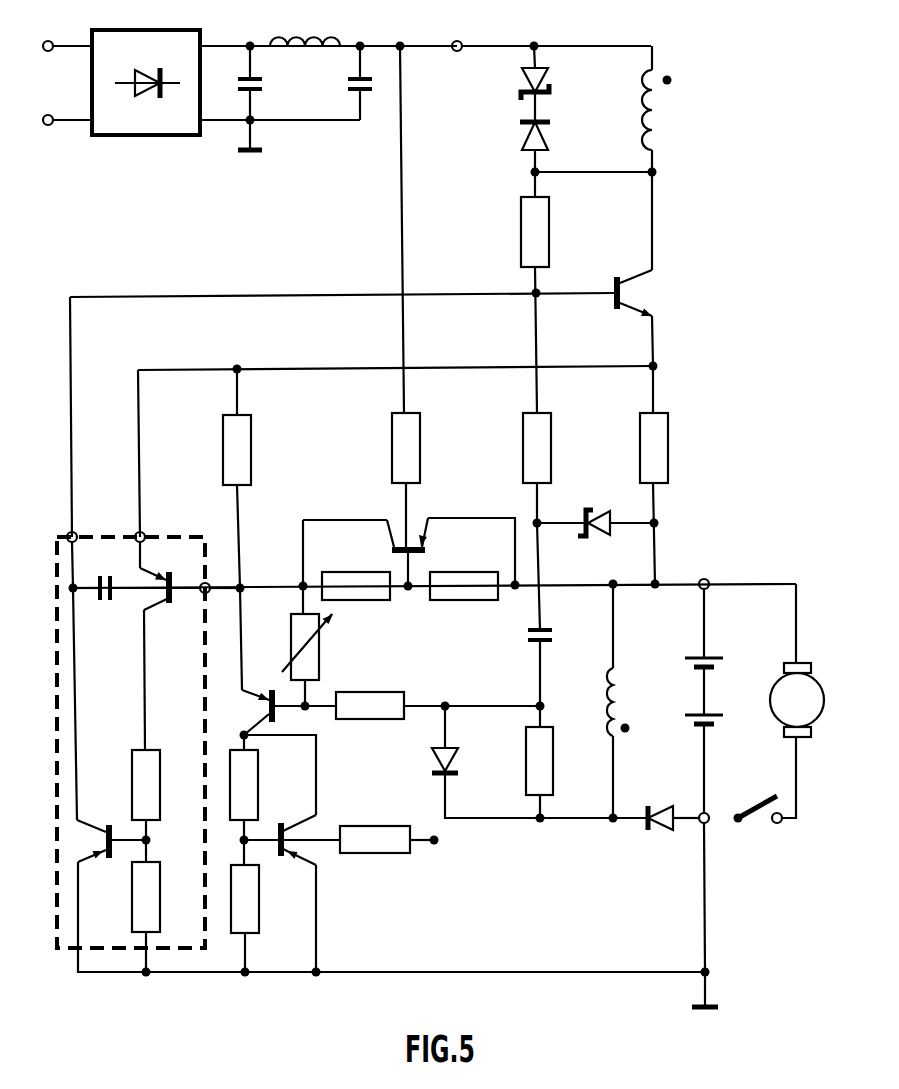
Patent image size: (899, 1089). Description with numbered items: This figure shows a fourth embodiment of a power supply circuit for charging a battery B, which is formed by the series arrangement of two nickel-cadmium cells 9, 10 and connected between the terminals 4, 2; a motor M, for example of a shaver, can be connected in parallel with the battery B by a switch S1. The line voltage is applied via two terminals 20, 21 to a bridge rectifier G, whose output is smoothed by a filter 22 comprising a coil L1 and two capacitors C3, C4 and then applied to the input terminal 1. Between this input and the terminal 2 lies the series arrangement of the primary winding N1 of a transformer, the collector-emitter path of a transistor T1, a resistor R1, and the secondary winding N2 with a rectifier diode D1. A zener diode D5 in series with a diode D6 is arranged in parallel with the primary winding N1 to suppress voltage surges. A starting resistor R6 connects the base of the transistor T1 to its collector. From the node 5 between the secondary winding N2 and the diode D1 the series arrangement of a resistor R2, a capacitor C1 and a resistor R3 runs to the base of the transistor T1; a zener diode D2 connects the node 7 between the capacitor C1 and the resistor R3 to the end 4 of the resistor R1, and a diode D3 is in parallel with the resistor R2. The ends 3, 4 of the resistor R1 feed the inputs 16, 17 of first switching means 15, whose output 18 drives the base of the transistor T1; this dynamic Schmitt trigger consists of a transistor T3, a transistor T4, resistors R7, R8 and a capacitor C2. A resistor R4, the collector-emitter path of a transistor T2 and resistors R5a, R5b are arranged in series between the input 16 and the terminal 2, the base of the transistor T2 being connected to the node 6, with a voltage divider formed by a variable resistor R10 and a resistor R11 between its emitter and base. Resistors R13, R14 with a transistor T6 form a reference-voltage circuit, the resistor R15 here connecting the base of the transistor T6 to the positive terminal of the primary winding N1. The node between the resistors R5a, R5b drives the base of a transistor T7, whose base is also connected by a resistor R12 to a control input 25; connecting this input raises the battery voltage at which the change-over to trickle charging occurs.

The terminal 20 is at (54, 32).
The terminal 21 is at (54, 106).
The bridge rectifier G is at (138, 136).
The filter 22 is at (302, 103).
The capacitor C3 is at (235, 111).
The capacitor C4 is at (347, 84).
The coil L1 is at (305, 25).
The input terminal 1 is at (456, 41).
The zener diode D5 is at (518, 80).
The diode D6 is at (518, 132).
The primary winding N1 is at (662, 108).
The starting resistor R6 is at (549, 230).
The transistor T1 is at (617, 276).
The end of resistor R1 3 is at (657, 363).
The resistor R4 is at (251, 447).
The resistor R15 is at (420, 445).
The resistor R3 is at (551, 445).
The resistor R1 is at (668, 445).
The zener diode D2 is at (600, 509).
The node 7 is at (540, 528).
The terminal 4 is at (704, 579).
The first switching means 15 is at (60, 950).
The output 18 is at (75, 533).
The input 16 is at (143, 533).
The input 17 is at (208, 584).
The capacitor C2 is at (106, 602).
The transistor T3 is at (170, 604).
The transistor T6 is at (427, 552).
The resistor R13 is at (355, 601).
The resistor R14 is at (463, 601).
The variable resistor R10 is at (320, 650).
The transistor T2 is at (272, 689).
The resistor R11 is at (368, 720).
The capacitor C1 is at (553, 636).
The node 6 is at (538, 703).
The resistor R2 is at (525, 760).
The secondary winding N2 is at (600, 705).
The node 5 is at (613, 823).
The rectifier diode D1 is at (665, 805).
The terminal 2 is at (708, 823).
The switch S1 is at (760, 804).
The nickel-cadmium cell 9 is at (723, 663).
The nickel-cadmium cell 10 is at (723, 720).
The battery B is at (698, 690).
The motor M is at (790, 662).
The resistor R7 is at (132, 766).
The transistor T4 is at (109, 824).
The resistor R8 is at (132, 896).
The resistor R5a is at (258, 780).
The resistor R5b is at (259, 898).
The transistor T7 is at (281, 858).
The resistor R12 is at (378, 854).
The control input 25 is at (436, 845).
The diode D3 is at (430, 765).